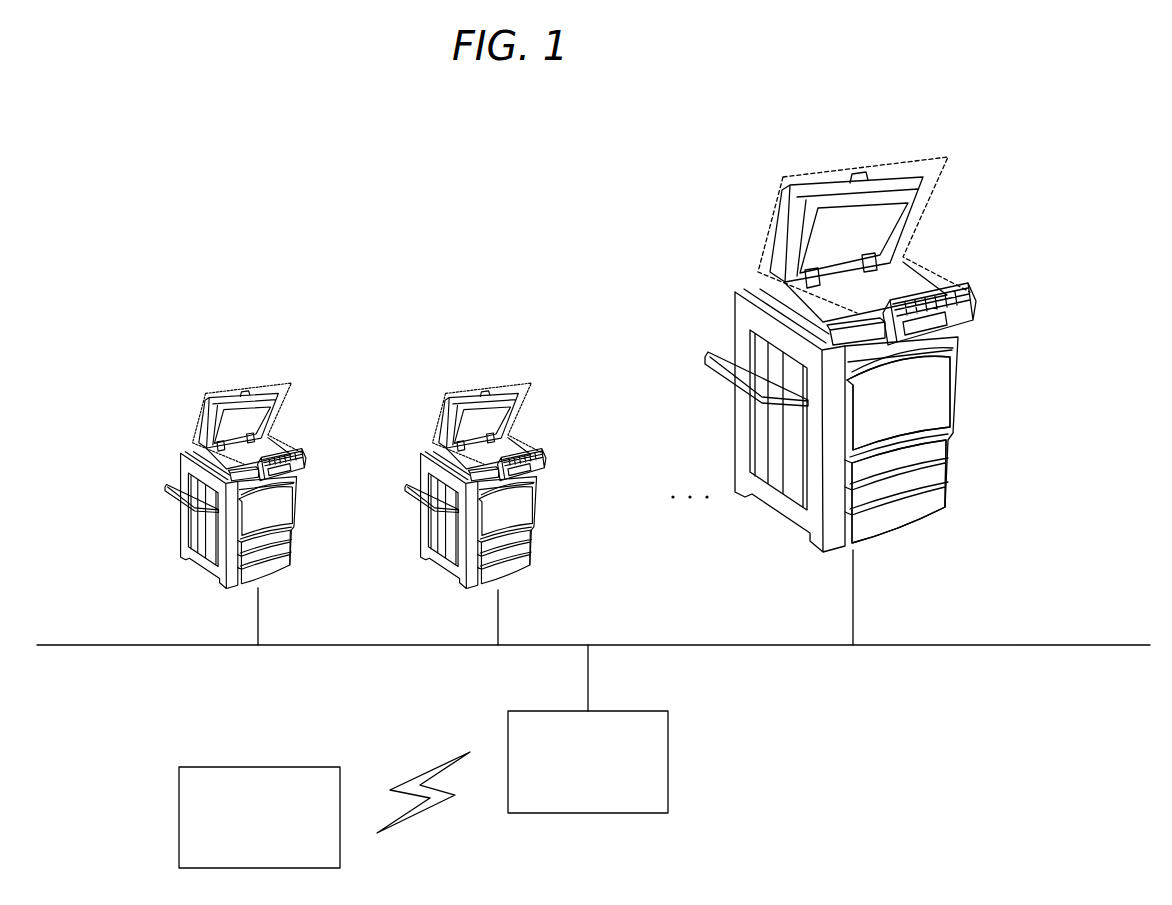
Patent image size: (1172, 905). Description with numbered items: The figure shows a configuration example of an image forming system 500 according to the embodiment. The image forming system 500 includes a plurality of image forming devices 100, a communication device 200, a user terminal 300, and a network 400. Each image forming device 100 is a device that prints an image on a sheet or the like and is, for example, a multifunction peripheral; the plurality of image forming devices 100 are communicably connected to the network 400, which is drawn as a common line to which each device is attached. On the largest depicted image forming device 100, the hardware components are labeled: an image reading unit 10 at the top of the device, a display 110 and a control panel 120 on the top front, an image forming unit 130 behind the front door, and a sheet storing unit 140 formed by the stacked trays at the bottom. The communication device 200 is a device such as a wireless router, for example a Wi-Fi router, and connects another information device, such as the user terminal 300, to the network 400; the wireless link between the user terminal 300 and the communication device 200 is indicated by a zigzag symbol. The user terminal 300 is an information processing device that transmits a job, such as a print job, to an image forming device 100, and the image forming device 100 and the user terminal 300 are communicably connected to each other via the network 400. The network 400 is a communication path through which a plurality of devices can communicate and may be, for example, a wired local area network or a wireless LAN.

The image forming system 500 is at (560, 220).
The image forming device 100 is at (852, 148).
The image reading unit 10 is at (920, 157).
The display 110 is at (933, 322).
The control panel 120 is at (970, 310).
The image forming unit 130 is at (928, 413).
The sheet storing unit 140 is at (963, 440).
The communication device 200 is at (613, 710).
The user terminal 300 is at (280, 766).
The network 400 is at (1074, 628).